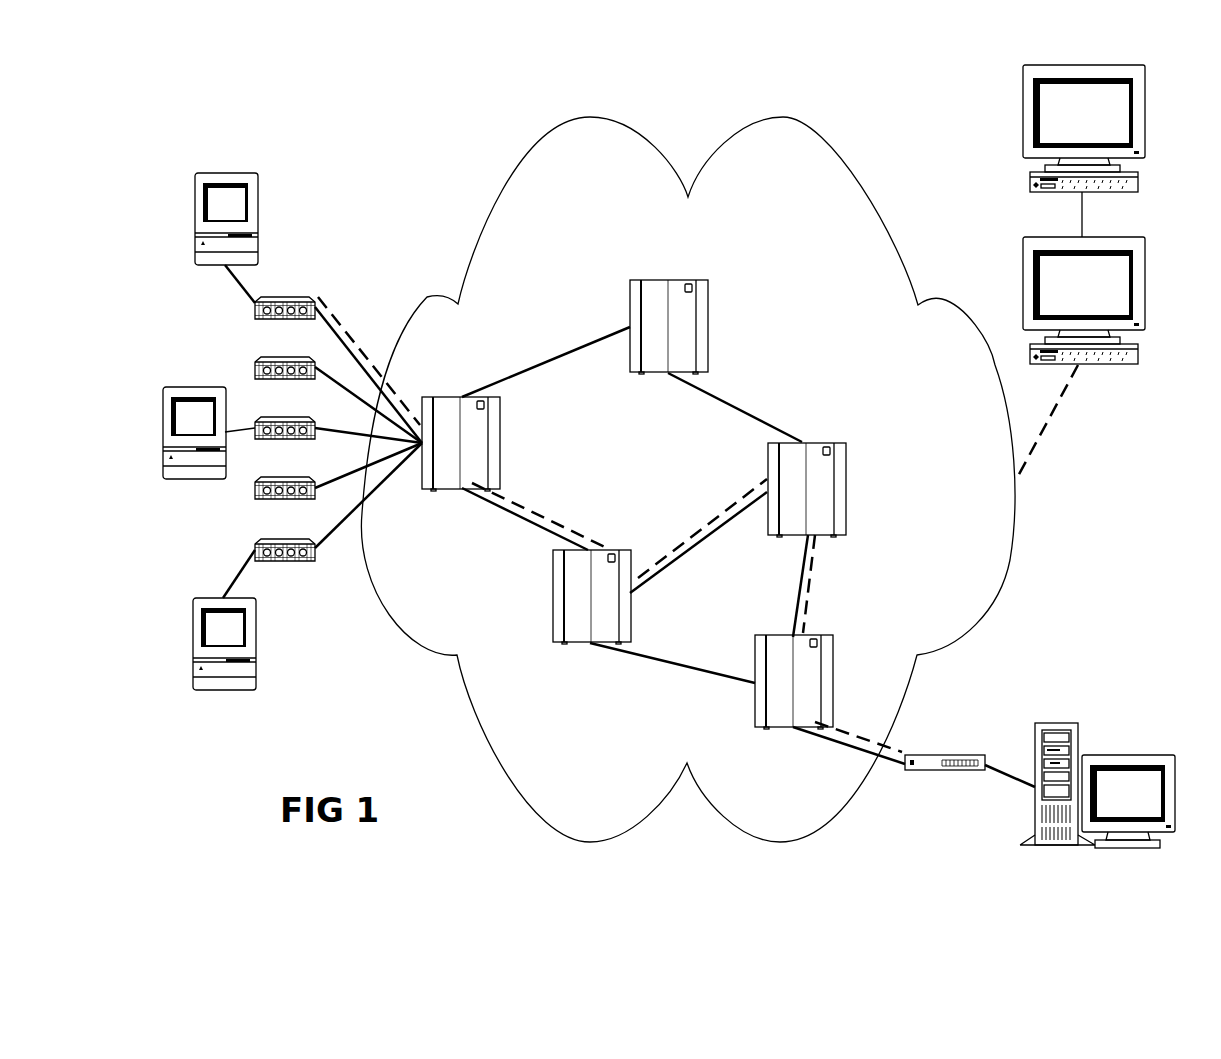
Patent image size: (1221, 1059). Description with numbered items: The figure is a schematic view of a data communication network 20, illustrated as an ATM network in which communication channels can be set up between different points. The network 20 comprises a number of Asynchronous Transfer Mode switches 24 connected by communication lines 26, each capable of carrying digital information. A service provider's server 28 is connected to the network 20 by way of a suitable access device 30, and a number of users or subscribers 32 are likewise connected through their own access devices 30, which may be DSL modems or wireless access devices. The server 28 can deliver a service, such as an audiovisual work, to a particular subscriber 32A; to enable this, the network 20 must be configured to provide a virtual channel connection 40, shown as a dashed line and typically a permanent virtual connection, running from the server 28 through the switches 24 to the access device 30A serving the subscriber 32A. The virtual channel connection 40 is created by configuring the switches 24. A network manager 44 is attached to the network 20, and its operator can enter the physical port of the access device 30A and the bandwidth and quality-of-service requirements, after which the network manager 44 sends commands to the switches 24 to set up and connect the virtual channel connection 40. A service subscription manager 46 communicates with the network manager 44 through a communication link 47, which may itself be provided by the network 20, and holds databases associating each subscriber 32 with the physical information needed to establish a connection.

The network 20 is at (392, 115).
The ATM switch 24 is at (450, 410).
The communication line 26 is at (592, 340).
The server 28 is at (1128, 755).
The access device 30 is at (283, 300).
The access device 30A is at (292, 300).
The user 32 is at (257, 200).
The user 32A is at (210, 173).
The virtual channel connection 40 is at (532, 513).
The network manager 44 is at (1020, 240).
The service subscription manager 46 is at (1023, 66).
The communication link 47 is at (1082, 212).